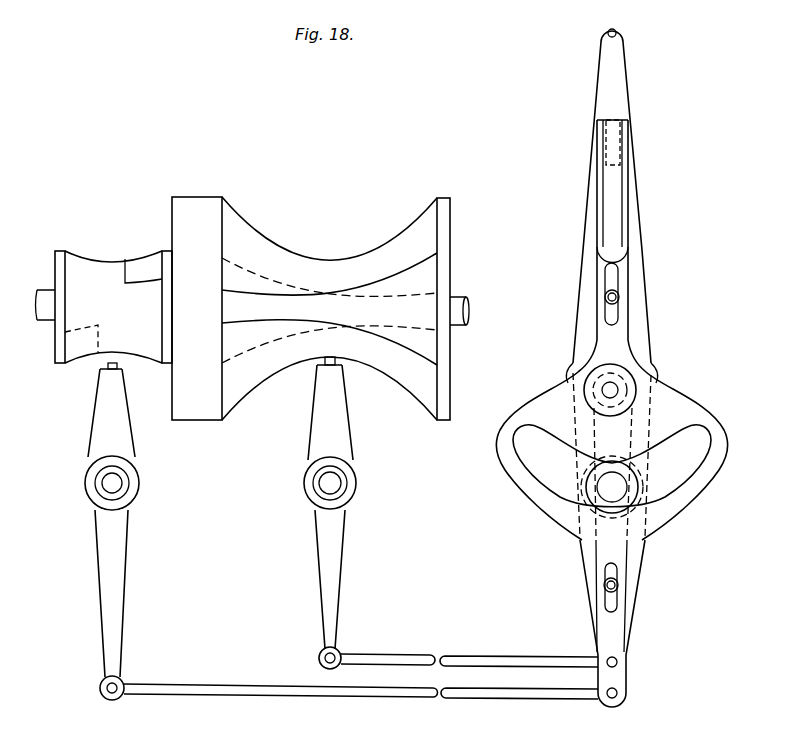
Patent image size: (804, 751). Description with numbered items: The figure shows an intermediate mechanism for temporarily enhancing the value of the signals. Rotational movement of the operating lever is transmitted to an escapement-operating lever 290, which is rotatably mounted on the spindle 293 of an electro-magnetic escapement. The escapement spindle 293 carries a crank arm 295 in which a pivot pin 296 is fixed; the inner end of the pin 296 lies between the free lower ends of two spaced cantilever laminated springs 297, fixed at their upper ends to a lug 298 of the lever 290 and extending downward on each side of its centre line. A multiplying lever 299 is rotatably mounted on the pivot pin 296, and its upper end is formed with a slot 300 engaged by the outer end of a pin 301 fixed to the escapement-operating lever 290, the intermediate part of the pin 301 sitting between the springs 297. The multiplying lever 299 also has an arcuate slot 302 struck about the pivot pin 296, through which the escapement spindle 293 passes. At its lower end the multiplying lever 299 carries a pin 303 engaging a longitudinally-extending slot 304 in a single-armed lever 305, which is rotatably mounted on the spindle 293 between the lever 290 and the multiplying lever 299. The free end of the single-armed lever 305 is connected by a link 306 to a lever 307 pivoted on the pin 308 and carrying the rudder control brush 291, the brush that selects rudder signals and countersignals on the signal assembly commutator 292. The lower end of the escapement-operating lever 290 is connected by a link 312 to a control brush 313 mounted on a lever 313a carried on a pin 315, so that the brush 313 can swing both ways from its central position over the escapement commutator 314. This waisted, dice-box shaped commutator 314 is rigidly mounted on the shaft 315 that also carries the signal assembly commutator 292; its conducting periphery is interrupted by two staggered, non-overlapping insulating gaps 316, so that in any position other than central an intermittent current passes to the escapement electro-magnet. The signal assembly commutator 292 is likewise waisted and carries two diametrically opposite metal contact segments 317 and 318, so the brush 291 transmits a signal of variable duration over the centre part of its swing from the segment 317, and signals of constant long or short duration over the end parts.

The escapement-operating lever 290 is at (600, 58).
The rudder control brush 291 is at (318, 362).
The signal assembly commutator 292 is at (357, 257).
The escapement spindle 293 is at (614, 478).
The crank arm 295 is at (623, 429).
The pivot pin 296 is at (612, 385).
The cantilever laminated springs 297 is at (621, 192).
The lug 298 is at (608, 135).
The multiplying lever 299 is at (532, 499).
The slot 300 is at (603, 273).
The pin 301 is at (604, 297).
The arcuate slot 302 is at (612, 466).
The pin 303 is at (604, 585).
The longitudinally-extending slot 304 is at (606, 604).
The single-armed lever 305 is at (607, 629).
The link 306 is at (412, 655).
The lever 307 is at (318, 566).
The pin 308 is at (318, 486).
The link 312 is at (400, 699).
The control brush 313 is at (122, 364).
The lever 313a is at (100, 590).
The escapement commutator 314 is at (99, 307).
The shaft 315 is at (468, 303).
The gaps 316 is at (145, 258).
The metal contact segment 317 is at (398, 345).
The metal contact segment 318 is at (257, 270).